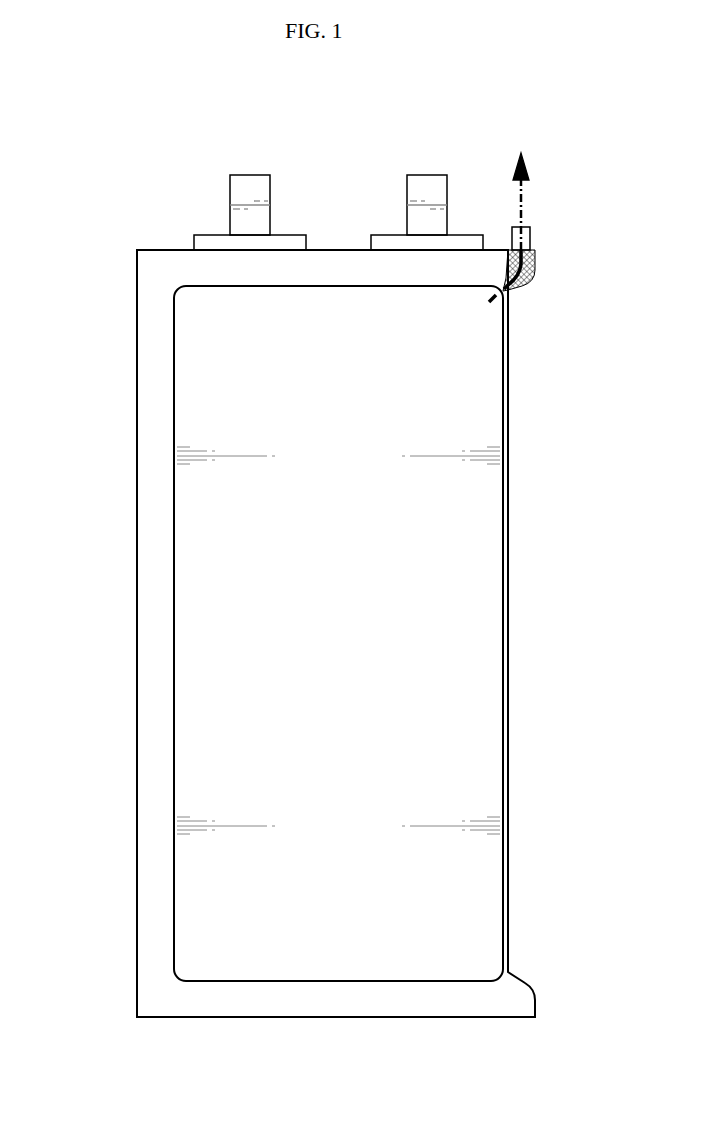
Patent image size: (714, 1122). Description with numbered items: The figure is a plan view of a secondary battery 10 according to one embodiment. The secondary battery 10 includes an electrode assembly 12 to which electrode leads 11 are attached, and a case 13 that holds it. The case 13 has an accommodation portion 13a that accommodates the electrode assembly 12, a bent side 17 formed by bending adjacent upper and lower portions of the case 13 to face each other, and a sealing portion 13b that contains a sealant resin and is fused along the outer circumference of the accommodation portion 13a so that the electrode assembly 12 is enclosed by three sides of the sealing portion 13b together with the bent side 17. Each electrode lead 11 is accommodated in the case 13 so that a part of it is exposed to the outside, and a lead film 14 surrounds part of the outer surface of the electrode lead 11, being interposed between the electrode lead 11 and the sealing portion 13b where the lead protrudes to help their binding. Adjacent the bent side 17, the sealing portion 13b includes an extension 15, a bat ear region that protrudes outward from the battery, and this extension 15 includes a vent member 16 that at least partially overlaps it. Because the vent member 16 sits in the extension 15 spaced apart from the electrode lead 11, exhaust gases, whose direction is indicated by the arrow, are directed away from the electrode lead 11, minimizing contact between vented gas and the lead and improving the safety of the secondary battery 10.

The secondary battery 10 is at (173, 155).
The electrode lead 11 is at (260, 192).
The electrode assembly 12 is at (492, 629).
The case 13 is at (512, 802).
The accommodation portion 13a is at (170, 910).
The sealing portion 13b is at (152, 798).
The lead film 14 is at (298, 242).
The extension 15 is at (534, 283).
The vent member 16 is at (527, 230).
The bent side 17 is at (509, 406).